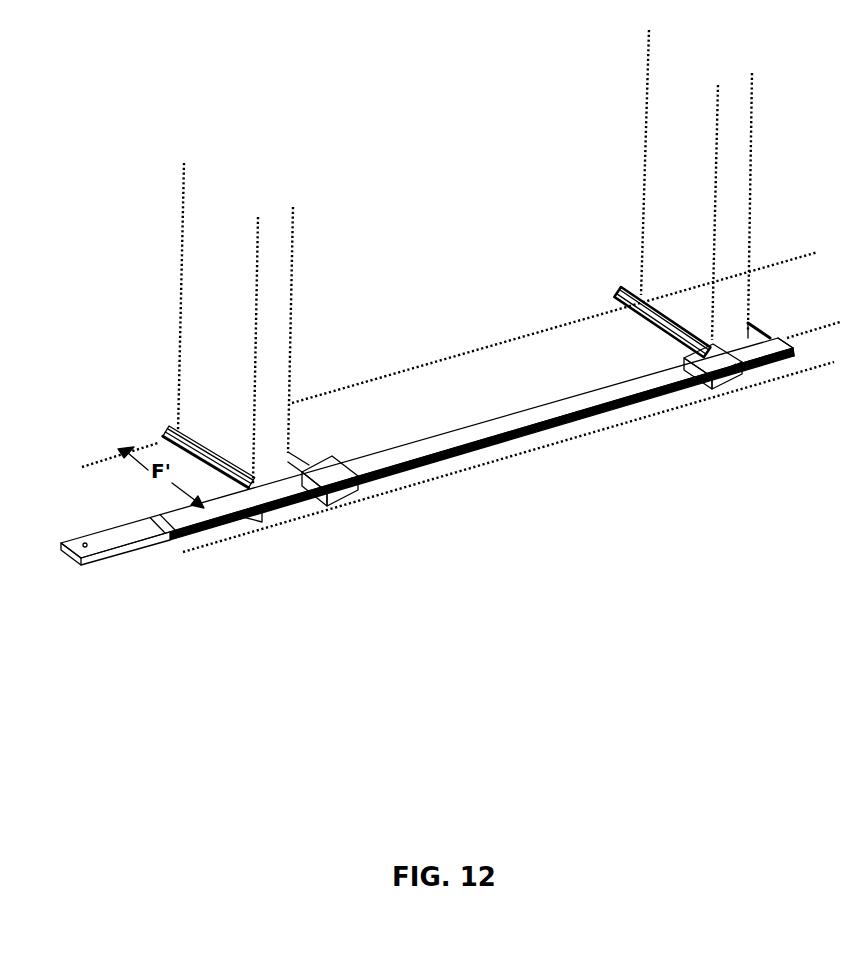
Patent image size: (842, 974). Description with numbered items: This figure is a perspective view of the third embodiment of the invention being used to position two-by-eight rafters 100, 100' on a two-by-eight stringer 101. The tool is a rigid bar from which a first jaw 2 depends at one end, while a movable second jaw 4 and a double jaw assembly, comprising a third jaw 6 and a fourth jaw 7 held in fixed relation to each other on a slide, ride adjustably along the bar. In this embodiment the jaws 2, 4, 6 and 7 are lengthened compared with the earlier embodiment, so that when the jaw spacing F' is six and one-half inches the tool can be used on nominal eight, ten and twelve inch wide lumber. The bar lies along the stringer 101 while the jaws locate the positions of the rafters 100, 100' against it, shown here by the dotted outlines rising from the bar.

The rafter 100 is at (158, 322).
The rafter 100' is at (629, 296).
The stringer 101 is at (373, 413).
The fourth jaw 7 is at (170, 433).
The third jaw 6 is at (292, 457).
The first jaw 2 is at (758, 362).
The second jaw 4 is at (675, 340).